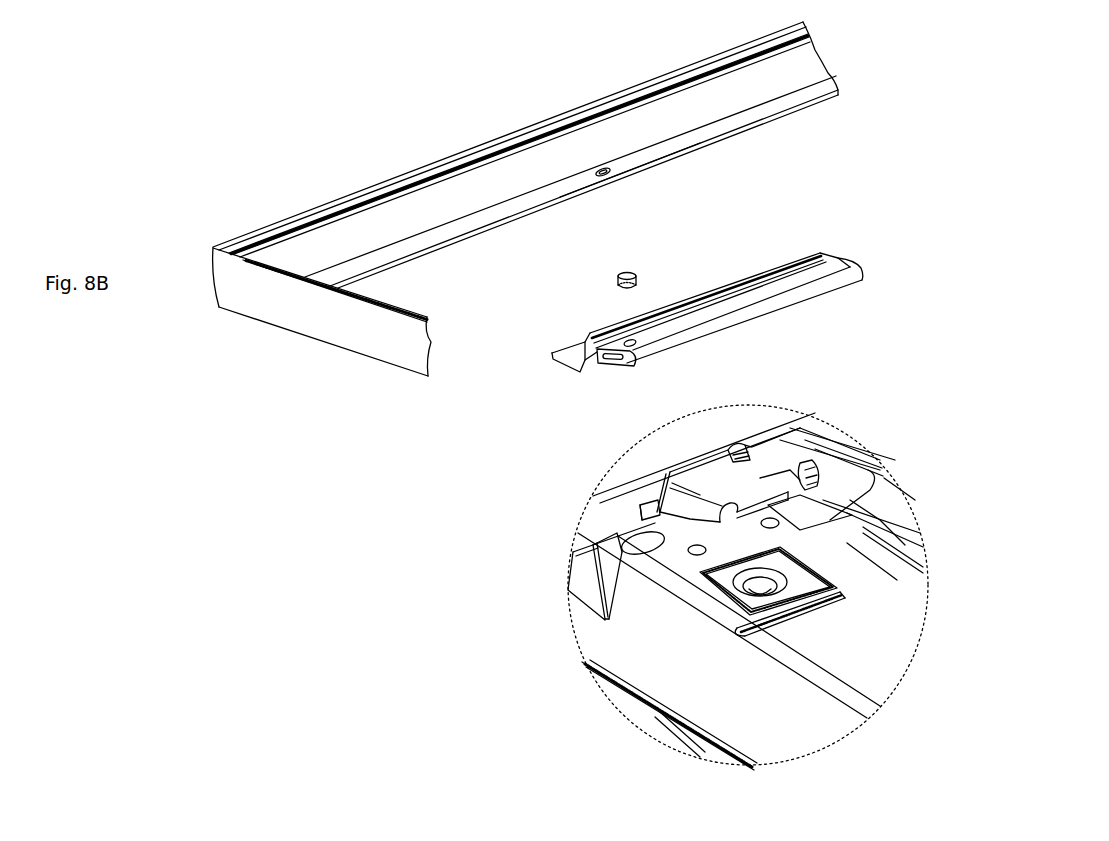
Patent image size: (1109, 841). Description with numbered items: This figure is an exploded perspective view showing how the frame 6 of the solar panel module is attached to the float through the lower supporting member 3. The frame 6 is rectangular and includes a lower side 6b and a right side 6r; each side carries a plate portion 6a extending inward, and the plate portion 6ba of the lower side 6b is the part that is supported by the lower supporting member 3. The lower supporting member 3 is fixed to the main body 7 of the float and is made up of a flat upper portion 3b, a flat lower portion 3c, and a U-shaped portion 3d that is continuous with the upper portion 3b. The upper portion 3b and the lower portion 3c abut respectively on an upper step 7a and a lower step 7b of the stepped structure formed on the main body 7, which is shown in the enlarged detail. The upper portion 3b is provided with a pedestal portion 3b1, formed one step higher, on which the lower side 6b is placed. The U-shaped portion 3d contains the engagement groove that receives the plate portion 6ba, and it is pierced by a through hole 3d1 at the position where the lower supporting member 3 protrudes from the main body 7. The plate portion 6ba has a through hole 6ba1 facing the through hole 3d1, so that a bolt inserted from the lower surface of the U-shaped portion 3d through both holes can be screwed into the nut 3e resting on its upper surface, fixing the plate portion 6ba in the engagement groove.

The frame 6 is at (399, 162).
The lower side 6b is at (550, 130).
The through hole 6ba1 is at (618, 167).
The plate portion 6ba is at (777, 107).
The plate portion 6a is at (717, 152).
The right side 6r is at (278, 308).
The lower supporting member 3 is at (853, 244).
The upper portion 3b is at (609, 368).
The pedestal portion 3b1 is at (600, 332).
The lower portion 3c is at (562, 366).
The U-shaped portion 3d is at (813, 313).
The through hole 3d1 is at (645, 338).
The nut 3e is at (638, 281).
The main body 7 is at (624, 643).
The upper step 7a is at (833, 517).
The lower step 7b is at (672, 553).